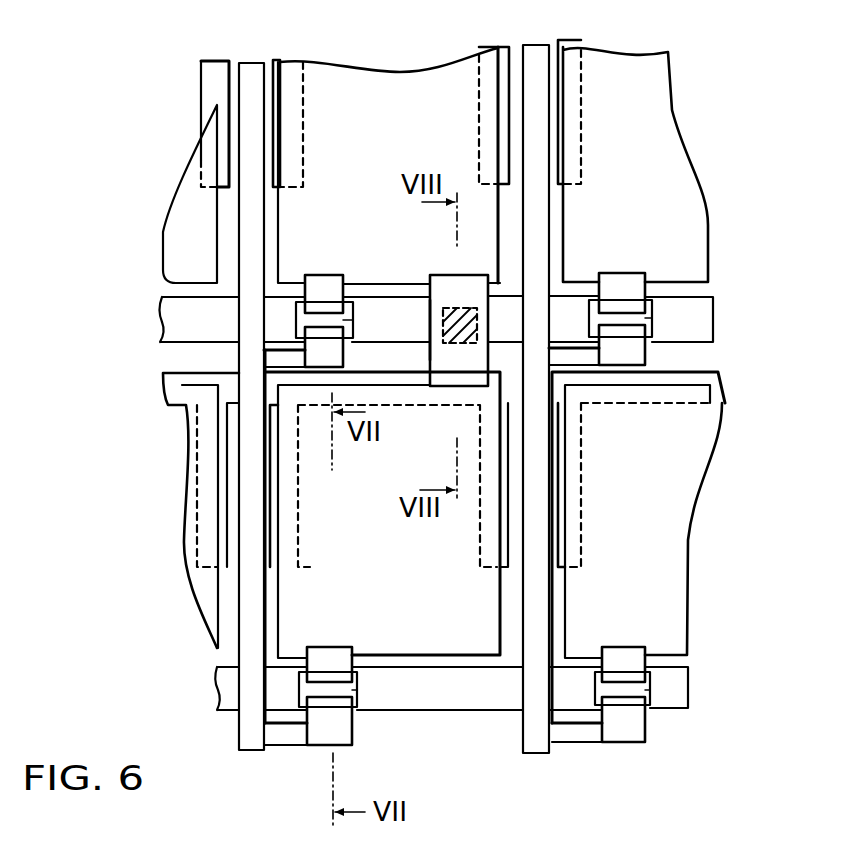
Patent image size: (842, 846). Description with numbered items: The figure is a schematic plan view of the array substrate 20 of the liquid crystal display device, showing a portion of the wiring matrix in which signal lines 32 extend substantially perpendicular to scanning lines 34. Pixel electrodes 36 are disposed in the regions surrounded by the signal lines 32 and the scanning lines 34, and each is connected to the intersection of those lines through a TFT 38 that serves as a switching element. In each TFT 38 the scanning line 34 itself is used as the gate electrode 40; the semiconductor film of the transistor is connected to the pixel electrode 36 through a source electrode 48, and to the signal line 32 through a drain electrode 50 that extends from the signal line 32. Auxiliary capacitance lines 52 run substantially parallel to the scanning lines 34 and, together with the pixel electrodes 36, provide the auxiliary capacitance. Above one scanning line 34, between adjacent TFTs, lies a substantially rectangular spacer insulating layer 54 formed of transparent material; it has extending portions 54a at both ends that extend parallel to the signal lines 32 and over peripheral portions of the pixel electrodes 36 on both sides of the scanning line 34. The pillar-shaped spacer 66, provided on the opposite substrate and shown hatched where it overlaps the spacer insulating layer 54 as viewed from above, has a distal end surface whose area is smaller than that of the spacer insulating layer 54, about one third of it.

The array substrate 20 is at (627, 44).
The signal line 32 is at (253, 70).
The scanning line 34 is at (706, 328).
The pixel electrode 36 is at (398, 90).
The TFT 38 is at (360, 305).
The gate electrode 40 is at (353, 320).
The source electrode 48 is at (323, 282).
The drain electrode 50 is at (340, 352).
The auxiliary capacitance line 52 is at (290, 58).
The spacer insulating layer 54 is at (465, 276).
The extending portion 54a is at (440, 274).
The pillar-shaped spacer 66 is at (470, 312).